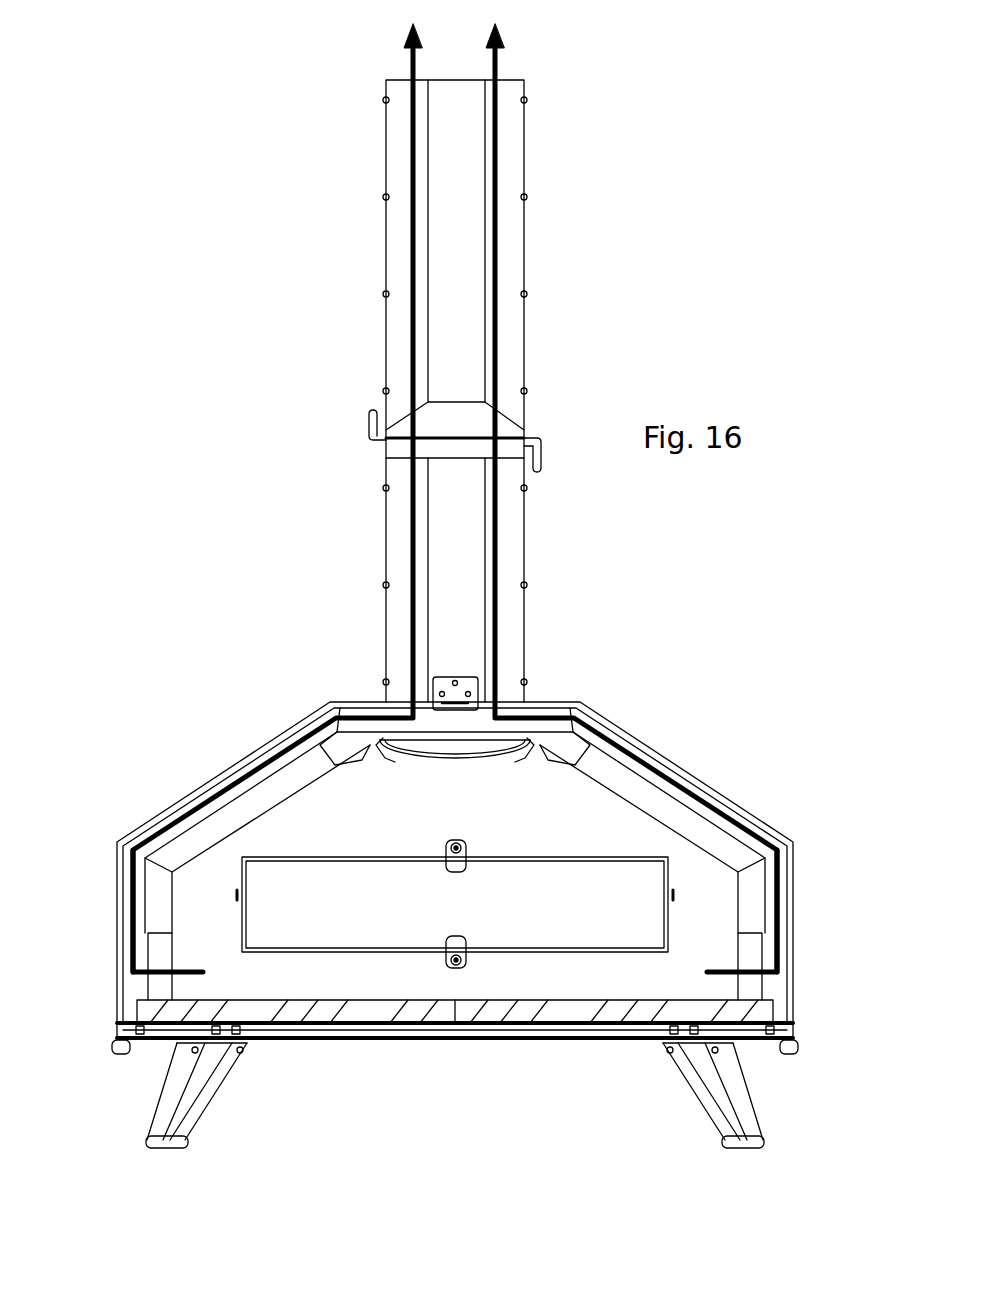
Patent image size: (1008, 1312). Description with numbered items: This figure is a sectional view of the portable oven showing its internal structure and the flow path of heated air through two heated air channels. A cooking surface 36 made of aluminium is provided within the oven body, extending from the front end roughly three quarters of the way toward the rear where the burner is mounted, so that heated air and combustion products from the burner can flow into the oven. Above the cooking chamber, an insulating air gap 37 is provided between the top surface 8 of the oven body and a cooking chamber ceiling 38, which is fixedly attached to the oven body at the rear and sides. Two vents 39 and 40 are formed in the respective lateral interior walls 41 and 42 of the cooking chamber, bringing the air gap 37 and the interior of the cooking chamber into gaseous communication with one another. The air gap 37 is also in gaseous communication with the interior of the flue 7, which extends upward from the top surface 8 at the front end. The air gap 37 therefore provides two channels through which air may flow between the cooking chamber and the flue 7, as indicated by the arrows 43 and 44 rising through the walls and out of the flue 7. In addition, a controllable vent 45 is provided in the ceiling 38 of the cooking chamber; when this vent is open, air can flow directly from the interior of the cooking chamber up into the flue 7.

The flue 7 is at (527, 268).
The top surface 8 is at (188, 790).
The cooking surface 36 is at (542, 1000).
The insulating air gap 37 is at (246, 770).
The cooking chamber ceiling 38 is at (627, 797).
The vent 39 is at (168, 983).
The vent 40 is at (742, 993).
The lateral interior wall 41 is at (168, 887).
The lateral interior wall 42 is at (742, 895).
The arrow 43 is at (132, 908).
The arrow 44 is at (783, 927).
The controllable vent 45 is at (440, 776).